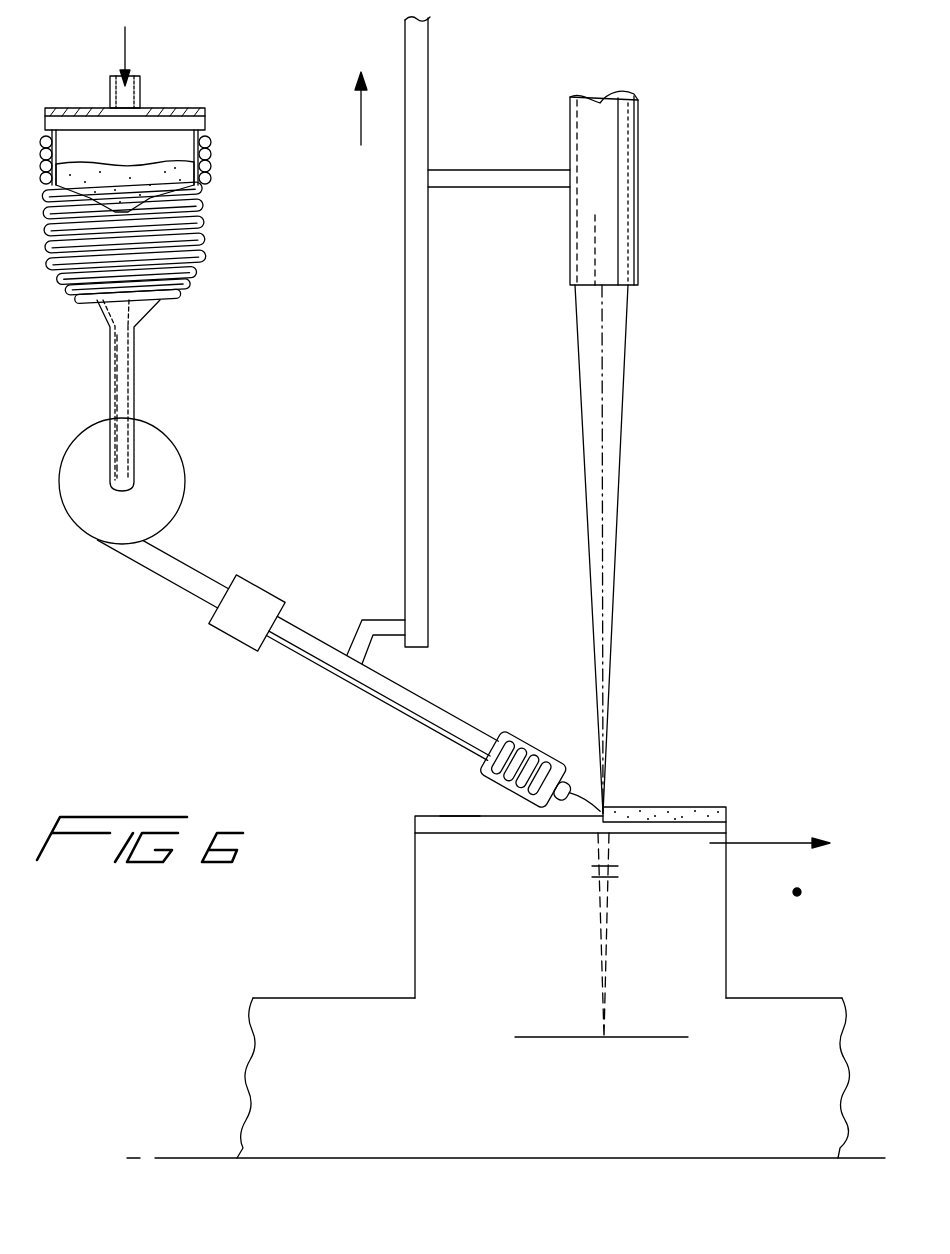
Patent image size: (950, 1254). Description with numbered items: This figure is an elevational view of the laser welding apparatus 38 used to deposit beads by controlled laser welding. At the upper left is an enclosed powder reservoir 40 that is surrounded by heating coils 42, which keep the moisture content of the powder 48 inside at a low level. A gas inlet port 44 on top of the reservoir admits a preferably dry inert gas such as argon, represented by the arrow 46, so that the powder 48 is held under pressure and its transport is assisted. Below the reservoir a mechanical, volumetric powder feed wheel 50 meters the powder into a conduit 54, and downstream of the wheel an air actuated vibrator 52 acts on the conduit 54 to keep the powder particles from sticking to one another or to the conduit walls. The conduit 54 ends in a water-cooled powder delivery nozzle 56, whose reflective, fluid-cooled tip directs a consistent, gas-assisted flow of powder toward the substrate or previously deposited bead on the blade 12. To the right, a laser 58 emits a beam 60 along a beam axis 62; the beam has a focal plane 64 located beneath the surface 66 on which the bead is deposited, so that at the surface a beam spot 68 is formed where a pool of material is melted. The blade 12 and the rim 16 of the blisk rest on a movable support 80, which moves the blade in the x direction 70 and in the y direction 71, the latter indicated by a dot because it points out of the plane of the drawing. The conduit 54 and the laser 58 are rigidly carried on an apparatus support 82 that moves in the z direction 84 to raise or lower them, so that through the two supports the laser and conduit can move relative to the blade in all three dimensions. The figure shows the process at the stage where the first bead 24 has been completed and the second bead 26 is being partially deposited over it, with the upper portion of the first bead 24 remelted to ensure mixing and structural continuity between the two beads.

The blade 12 is at (415, 903).
The rim 16 is at (347, 998).
The first bead 24 is at (415, 819).
The second bead 26 is at (685, 806).
The apparatus 38 is at (661, 120).
The powder reservoir 40 is at (94, 80).
The heating coils 42 is at (190, 283).
The gas inlet port 44 is at (126, 98).
The arrow representing inert gas 46 is at (130, 42).
The powder 48 is at (176, 164).
The powder feed wheel 50 is at (164, 490).
The air actuated vibrator 52 is at (237, 630).
The conduit 54 is at (297, 630).
The powder delivery nozzle 56 is at (531, 742).
The laser 58 is at (628, 192).
The beam 60 is at (620, 505).
The beam axis 62 is at (607, 410).
The focal plane 64 is at (582, 1037).
The surface 66 is at (460, 816).
The beam spot 68 is at (602, 836).
The x direction 70 is at (777, 840).
The y direction 71 is at (798, 902).
The movable support 80 is at (208, 1158).
The apparatus support 82 is at (405, 208).
The z direction 84 is at (360, 123).